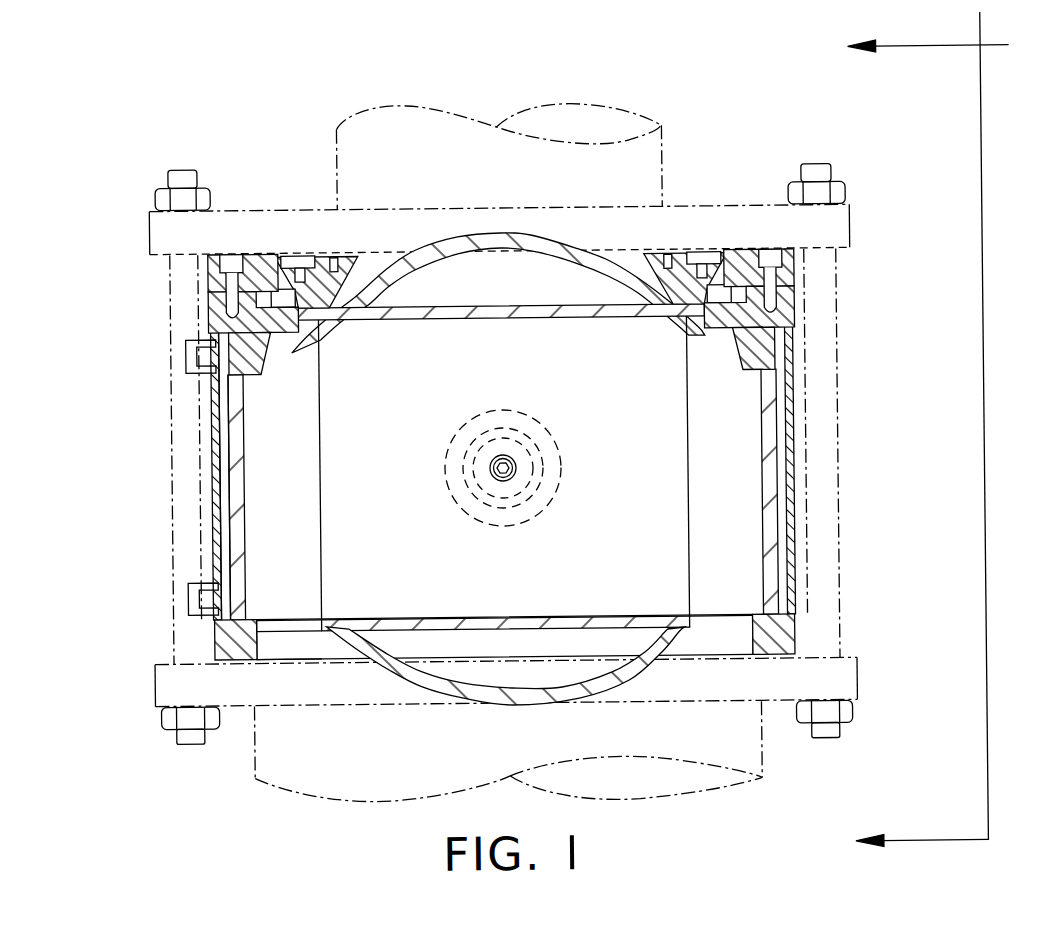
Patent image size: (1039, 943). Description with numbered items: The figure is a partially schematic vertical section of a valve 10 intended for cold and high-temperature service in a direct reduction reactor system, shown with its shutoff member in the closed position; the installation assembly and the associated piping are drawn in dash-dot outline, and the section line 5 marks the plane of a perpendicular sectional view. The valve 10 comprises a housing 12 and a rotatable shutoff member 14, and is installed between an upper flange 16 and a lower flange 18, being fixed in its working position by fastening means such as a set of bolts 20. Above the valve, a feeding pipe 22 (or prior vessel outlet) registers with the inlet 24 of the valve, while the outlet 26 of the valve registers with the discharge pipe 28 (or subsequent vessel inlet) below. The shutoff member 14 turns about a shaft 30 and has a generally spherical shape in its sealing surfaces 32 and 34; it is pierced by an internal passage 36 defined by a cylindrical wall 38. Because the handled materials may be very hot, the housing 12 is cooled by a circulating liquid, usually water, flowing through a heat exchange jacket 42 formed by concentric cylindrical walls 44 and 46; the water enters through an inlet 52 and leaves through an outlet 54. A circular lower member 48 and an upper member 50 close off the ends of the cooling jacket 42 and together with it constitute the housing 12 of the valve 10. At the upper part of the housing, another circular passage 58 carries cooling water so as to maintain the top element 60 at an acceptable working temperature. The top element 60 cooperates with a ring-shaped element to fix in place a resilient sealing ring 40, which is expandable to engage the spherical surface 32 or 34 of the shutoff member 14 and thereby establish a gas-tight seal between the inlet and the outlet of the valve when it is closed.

The section line 5- 5 is at (943, 428).
The valve 10 is at (738, 138).
The housing 12 is at (235, 420).
The rotatable shutoff member 14 is at (312, 462).
The upper flange 16 is at (152, 224).
The lower flange 18 is at (163, 689).
The bolts 20 is at (177, 283).
The feeding pipe 22 is at (347, 153).
The inlet 24 is at (356, 262).
The outlet 26 is at (298, 647).
The discharge pipe 28 is at (275, 768).
The shaft 30 is at (563, 466).
The sealing surface 32 is at (584, 243).
The sealing surface 34 is at (388, 679).
The internal passage 36 is at (397, 418).
The cylindrical wall 38 is at (557, 320).
The resilient sealing ring 40 is at (312, 315).
The heat exchange jacket 42 is at (222, 488).
The cylindrical wall 44 is at (216, 538).
The cylindrical wall 46 is at (240, 546).
The circular lower member 48 is at (225, 641).
The upper member 50 is at (215, 322).
The inlet 52 is at (200, 598).
The outlet 54 is at (190, 354).
The circular passage 58 is at (300, 255).
The top element 60 is at (747, 262).